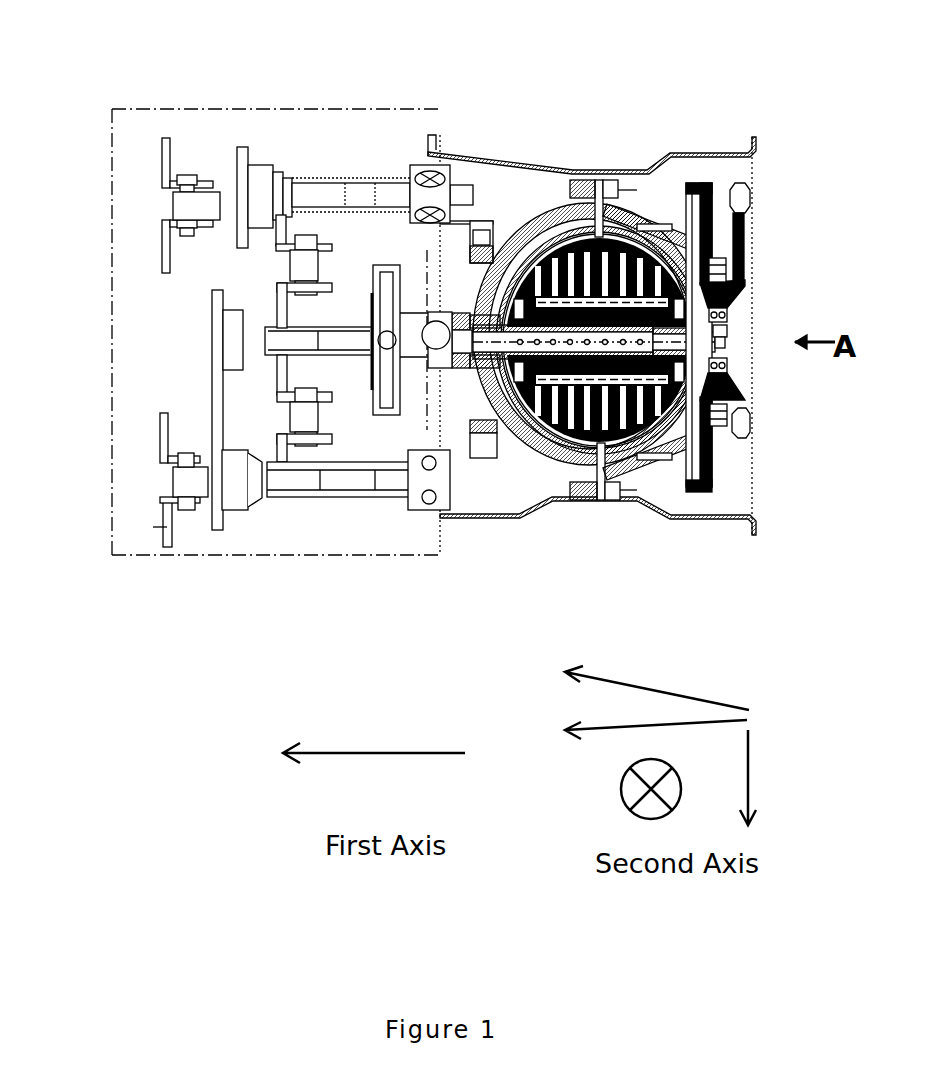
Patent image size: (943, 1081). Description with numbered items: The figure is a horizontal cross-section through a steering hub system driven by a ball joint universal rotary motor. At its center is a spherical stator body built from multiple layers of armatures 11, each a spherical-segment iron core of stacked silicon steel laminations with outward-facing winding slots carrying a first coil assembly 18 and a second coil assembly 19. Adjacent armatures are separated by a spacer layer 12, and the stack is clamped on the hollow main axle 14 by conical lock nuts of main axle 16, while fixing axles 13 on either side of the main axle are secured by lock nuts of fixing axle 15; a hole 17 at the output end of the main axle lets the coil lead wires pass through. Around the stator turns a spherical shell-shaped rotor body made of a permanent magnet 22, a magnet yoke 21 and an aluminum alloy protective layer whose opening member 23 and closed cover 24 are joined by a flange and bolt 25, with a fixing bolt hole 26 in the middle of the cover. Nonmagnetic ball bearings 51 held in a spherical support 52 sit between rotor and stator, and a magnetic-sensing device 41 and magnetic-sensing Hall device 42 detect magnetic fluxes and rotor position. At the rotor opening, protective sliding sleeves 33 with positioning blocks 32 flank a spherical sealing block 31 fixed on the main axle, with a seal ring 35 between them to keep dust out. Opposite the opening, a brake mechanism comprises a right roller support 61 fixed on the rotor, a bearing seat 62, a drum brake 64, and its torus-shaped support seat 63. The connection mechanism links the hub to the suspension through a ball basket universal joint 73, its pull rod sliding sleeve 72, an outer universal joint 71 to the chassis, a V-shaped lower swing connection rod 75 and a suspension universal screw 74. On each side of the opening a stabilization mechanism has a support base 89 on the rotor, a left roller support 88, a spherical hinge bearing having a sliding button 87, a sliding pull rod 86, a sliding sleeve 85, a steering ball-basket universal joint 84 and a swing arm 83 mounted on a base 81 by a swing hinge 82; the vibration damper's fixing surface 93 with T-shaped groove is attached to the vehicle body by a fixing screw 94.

The armature 11 is at (655, 462).
The spacer layer 12 is at (694, 494).
The fixing axle 13 is at (710, 488).
The main axle 14 is at (727, 340).
The lock nuts of fixing axle 15 is at (710, 455).
The lock nuts of main axle 16 is at (727, 366).
The hole 17 is at (428, 318).
The first coil assembly 18 is at (727, 418).
The second coil assembly 19 is at (750, 409).
The magnet yoke 21 is at (480, 455).
The permanent magnet 22 is at (525, 462).
The opening member 23 is at (580, 178).
The closed cover 24 is at (672, 228).
The bolt 25 is at (640, 222).
The fixing bolt hole 26 is at (727, 318).
The sealing block 31 is at (505, 228).
The positioning block 32 is at (553, 235).
The protective sliding sleeve 33 is at (613, 178).
The seal ring 35 is at (420, 500).
The magnetic-sensing device 41 is at (568, 500).
The magnetic-sensing Hall device 42 is at (608, 505).
The ball bearing 51 is at (593, 502).
The support 52 is at (640, 485).
The right roller support 61 is at (713, 190).
The bearing seat 62 is at (727, 298).
The support seat 63 is at (745, 240).
The drum brake 64 is at (712, 184).
The outer universal joint 71 is at (222, 368).
The pull rod sliding sleeve 72 is at (290, 348).
The ball basket universal joint 73 is at (373, 400).
The suspension universal screw 74 is at (386, 418).
The V-shaped lower swing connection rod 75 is at (282, 500).
The base 81 is at (200, 227).
The swing hinge 82 is at (175, 195).
The swing arm 83 is at (227, 203).
The steering ball-basket universal joint 84 is at (245, 150).
The sliding sleeve 85 is at (325, 183).
The sliding pull rod 86 is at (385, 195).
The spherical hinge bearing having a sliding button 87 is at (423, 167).
The left roller support 88 is at (473, 208).
The support base 89 is at (598, 178).
The fixing surface 93 is at (245, 440).
The fixing screw 94 is at (250, 400).